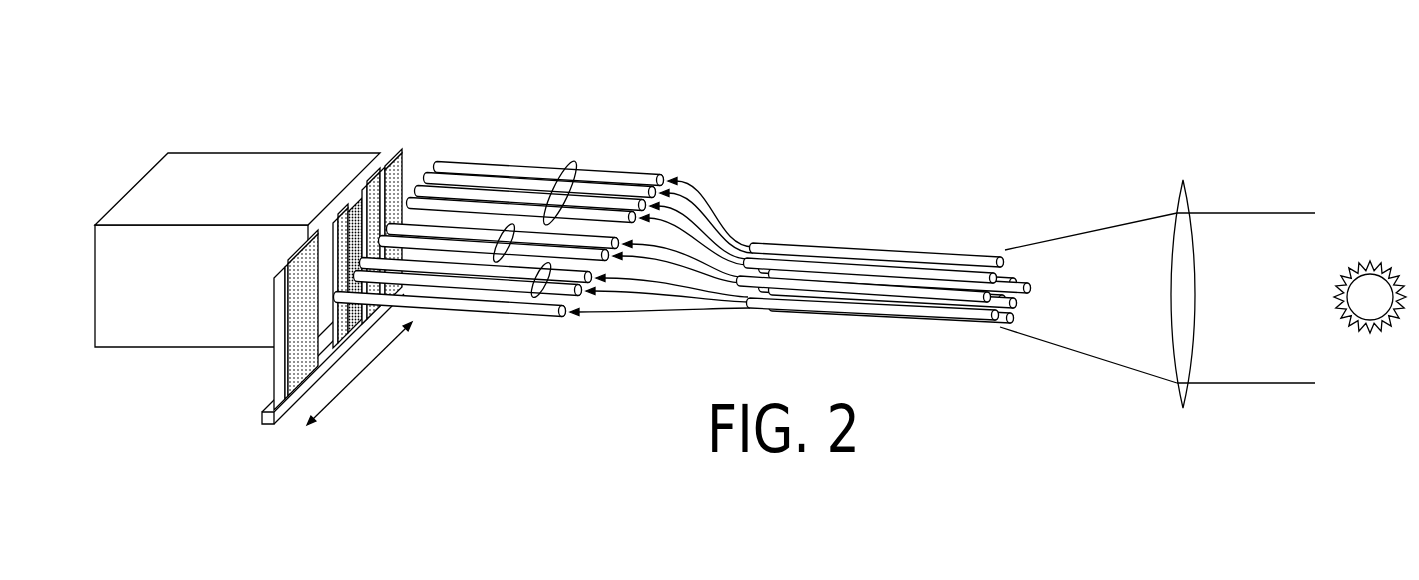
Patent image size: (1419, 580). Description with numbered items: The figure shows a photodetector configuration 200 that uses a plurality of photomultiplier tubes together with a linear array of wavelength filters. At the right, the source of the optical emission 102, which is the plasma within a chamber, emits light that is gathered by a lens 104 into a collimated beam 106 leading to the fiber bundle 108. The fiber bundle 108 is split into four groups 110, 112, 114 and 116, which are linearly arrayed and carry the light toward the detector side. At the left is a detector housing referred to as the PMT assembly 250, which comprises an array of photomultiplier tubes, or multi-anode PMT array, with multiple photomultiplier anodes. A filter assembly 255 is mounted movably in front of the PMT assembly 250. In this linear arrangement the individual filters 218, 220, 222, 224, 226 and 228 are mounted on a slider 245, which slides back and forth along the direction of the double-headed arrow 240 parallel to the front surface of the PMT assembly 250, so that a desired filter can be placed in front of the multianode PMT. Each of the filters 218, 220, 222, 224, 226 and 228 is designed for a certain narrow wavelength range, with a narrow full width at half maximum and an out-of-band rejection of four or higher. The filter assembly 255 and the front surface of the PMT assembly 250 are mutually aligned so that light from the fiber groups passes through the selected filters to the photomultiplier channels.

The source of the optical emission 102 is at (1378, 263).
The lens 104 is at (1177, 197).
The collimated beam 106 is at (1093, 330).
The fiber bundle 108 is at (891, 228).
The first fiber group 110 is at (577, 162).
The second fiber group 112 is at (497, 262).
The third fiber group 114 is at (542, 321).
The fourth fiber group 116 is at (435, 316).
The photodetector configuration 200 is at (902, 108).
The filter 218 is at (392, 153).
The filter 220 is at (358, 200).
The filter 222 is at (338, 218).
The filter 224 is at (333, 223).
The filter 226 is at (300, 250).
The filter 228 is at (280, 262).
The double-headed arrow 240 is at (348, 388).
The slider 245 is at (263, 424).
The PMT assembly 250 is at (200, 348).
The filter assembly 255 is at (210, 423).